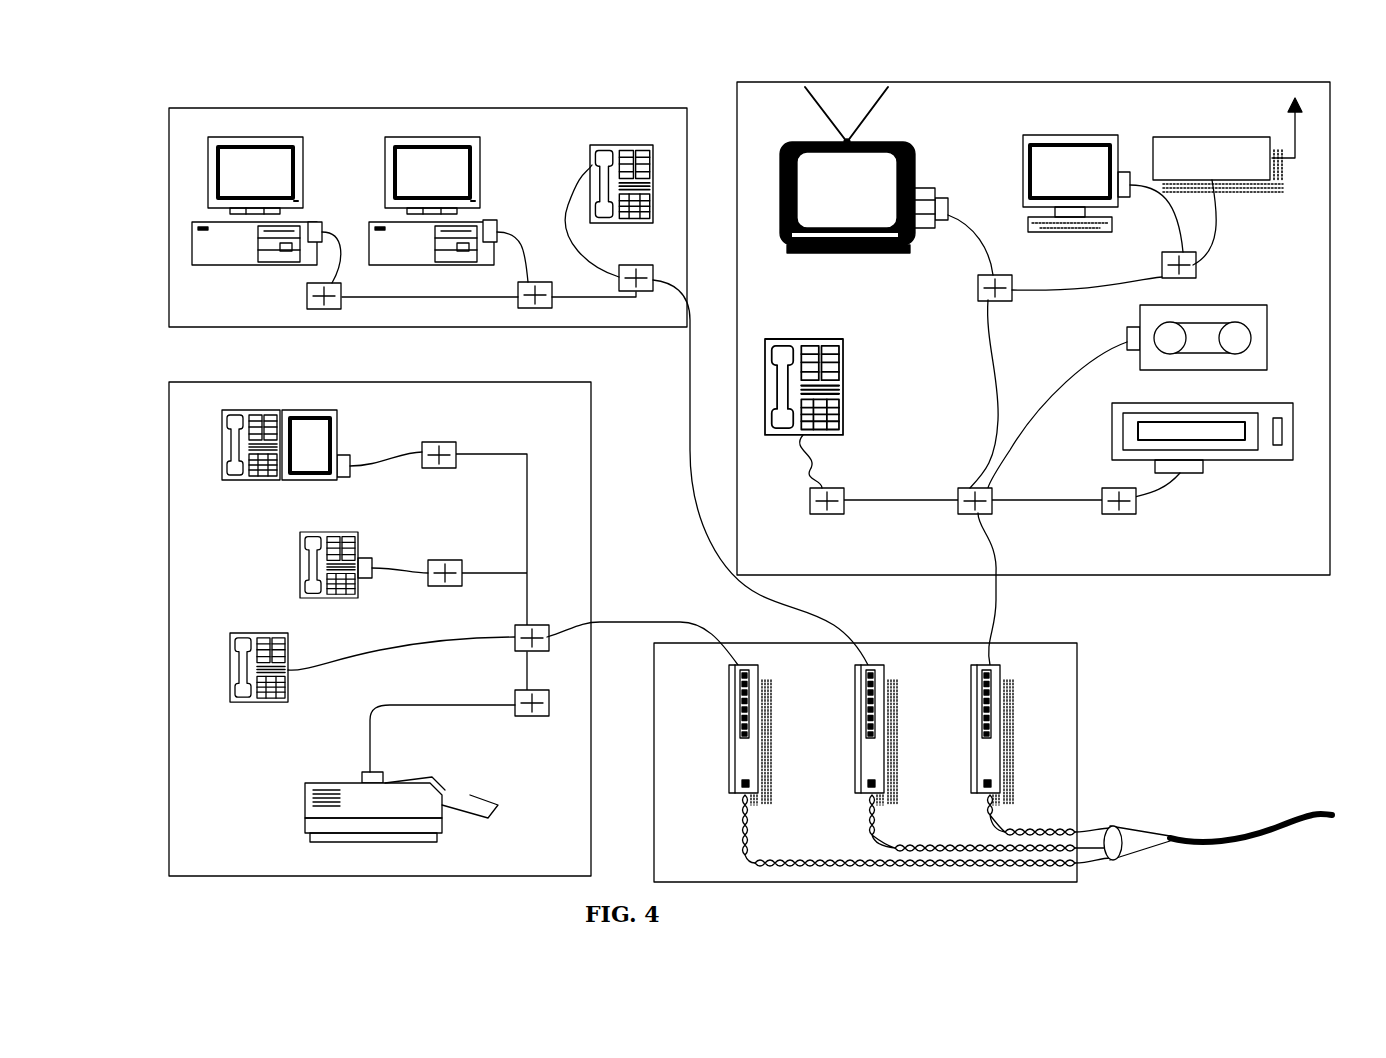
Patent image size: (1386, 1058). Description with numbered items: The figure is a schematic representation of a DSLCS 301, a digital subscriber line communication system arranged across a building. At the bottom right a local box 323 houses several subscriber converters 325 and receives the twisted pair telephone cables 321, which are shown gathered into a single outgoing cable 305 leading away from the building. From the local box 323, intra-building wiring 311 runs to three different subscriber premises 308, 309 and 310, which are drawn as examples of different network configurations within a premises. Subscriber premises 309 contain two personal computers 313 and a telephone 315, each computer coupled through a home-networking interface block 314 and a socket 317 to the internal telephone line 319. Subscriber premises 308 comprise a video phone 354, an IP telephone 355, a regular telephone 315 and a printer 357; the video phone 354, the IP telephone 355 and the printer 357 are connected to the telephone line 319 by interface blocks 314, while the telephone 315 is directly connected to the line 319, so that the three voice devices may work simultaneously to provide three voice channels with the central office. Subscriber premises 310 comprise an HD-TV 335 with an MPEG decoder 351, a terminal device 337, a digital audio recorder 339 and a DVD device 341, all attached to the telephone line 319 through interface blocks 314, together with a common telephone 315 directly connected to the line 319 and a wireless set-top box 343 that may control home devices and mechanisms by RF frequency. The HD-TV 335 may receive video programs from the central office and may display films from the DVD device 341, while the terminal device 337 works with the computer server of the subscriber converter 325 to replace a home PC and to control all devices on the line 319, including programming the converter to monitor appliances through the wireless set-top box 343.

The DSLCS 301 is at (686, 71).
The network cable 305 is at (1245, 832).
The subscriber premises 308 is at (395, 382).
The subscriber premises 309 is at (242, 115).
The subscriber premises 310 is at (1062, 82).
The intra-building wiring 311 is at (745, 650).
The personal computer 313 is at (296, 188).
The HPNA-2 interface block 314 is at (315, 221).
The telephone 315 is at (615, 146).
The socket 317 is at (307, 297).
The telephone line 319 is at (390, 297).
The twisted pair telephone cables 321 is at (1085, 825).
The local box 323 is at (1063, 720).
The subscriber converter 325 is at (715, 772).
The HD-TV 335 is at (905, 142).
The terminal device 337 is at (1068, 135).
The digital audio recorder 339 is at (1267, 308).
The DVD device 341 is at (1245, 453).
The wireless set-top box 343 is at (1227, 145).
The MPEG decoder 351 is at (930, 188).
The video phone 354 is at (340, 430).
The IP telephone 355 is at (300, 562).
The printer 357 is at (306, 820).